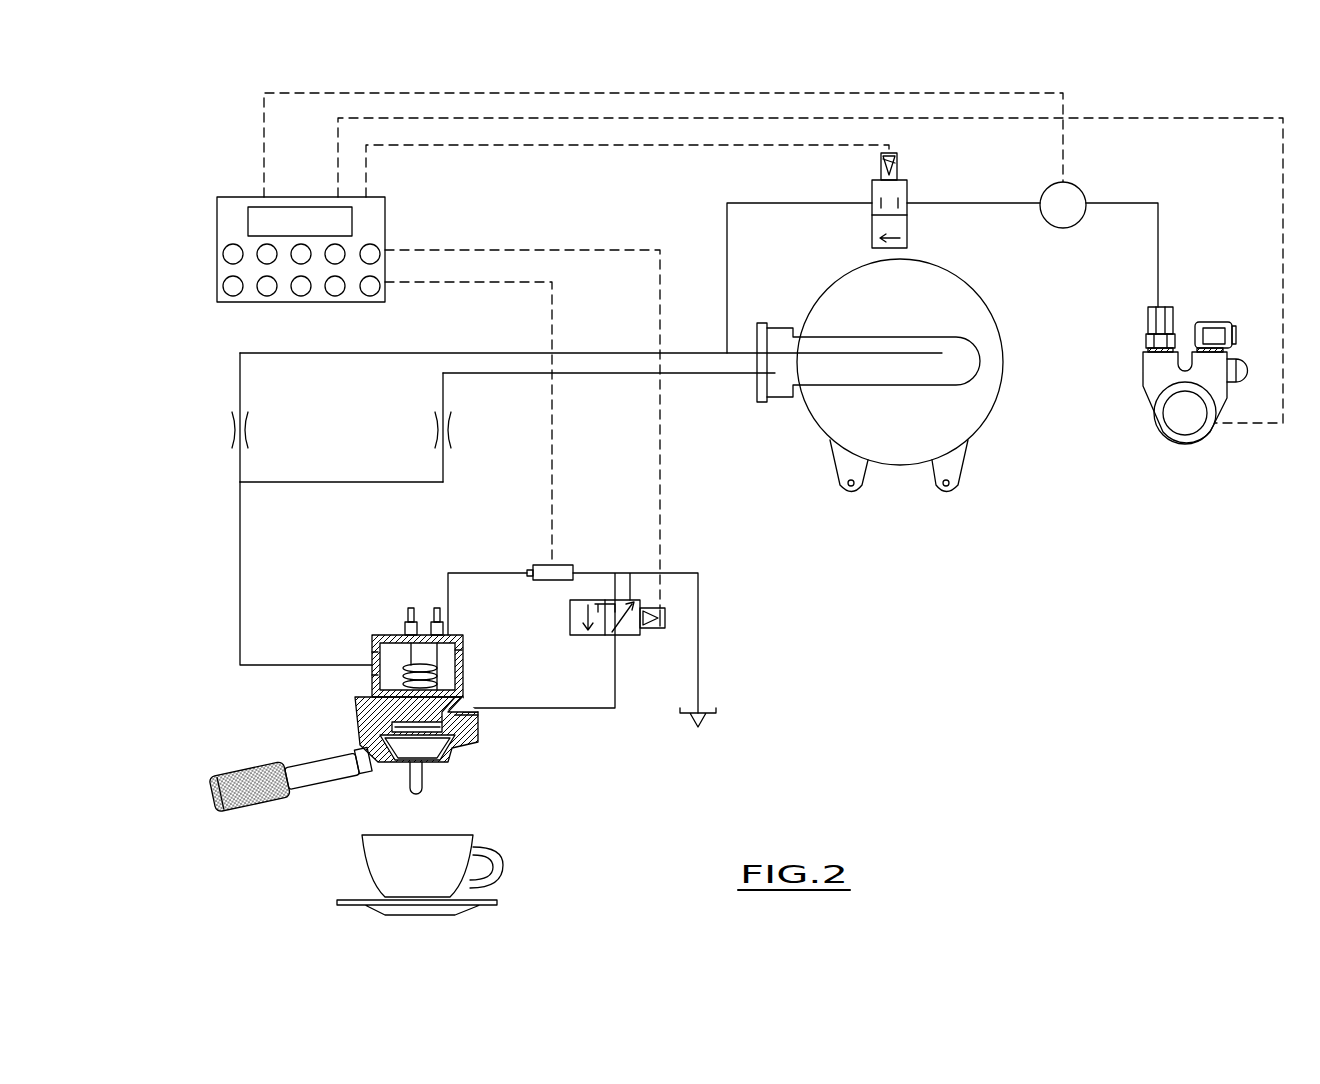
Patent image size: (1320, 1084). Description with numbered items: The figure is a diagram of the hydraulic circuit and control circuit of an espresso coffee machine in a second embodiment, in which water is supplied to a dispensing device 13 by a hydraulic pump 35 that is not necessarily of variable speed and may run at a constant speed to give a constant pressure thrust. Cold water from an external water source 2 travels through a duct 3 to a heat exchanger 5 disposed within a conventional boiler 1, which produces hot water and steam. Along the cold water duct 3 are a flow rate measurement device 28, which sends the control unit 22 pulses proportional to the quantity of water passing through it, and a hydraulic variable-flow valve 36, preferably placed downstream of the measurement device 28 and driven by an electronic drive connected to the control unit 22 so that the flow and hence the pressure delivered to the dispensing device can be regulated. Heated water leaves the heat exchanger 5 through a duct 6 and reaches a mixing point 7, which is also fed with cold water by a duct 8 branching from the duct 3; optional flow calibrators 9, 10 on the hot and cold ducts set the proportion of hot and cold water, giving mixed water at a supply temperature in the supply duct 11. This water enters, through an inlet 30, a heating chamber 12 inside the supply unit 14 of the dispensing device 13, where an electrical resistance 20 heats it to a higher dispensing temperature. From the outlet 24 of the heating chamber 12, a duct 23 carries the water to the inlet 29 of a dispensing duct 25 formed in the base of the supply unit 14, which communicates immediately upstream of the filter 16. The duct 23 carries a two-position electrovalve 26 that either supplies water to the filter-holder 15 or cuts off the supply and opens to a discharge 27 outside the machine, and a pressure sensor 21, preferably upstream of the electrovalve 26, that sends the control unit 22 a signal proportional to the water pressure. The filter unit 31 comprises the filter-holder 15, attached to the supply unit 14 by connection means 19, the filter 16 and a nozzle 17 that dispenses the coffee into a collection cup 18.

The boiler 1 is at (972, 412).
The external water source of cold water 2 is at (1232, 335).
The duct 3 is at (727, 265).
The heat exchanger 5 is at (830, 345).
The duct 6 is at (700, 382).
The mixing point 7 is at (242, 482).
The duct 8 is at (443, 353).
The flow calibrator 9 is at (452, 430).
The flow calibrator 10 is at (232, 430).
The supply duct 11 is at (238, 628).
The heating chamber 12 is at (375, 678).
The dispensing device 13 is at (330, 728).
The supply unit 14 is at (362, 690).
The filter-holder 15 is at (387, 762).
The filter 16 is at (445, 765).
The nozzle 17 is at (425, 793).
The collection cup 18 is at (395, 862).
The connection means 19 is at (482, 722).
The electrical resistance 20 is at (410, 615).
The pressure sensor 21 is at (560, 562).
The control unit 22 is at (232, 205).
The duct 23 is at (468, 573).
The outlet 24 is at (465, 655).
The dispensing duct 25 is at (458, 688).
The electrovalve 26 is at (602, 637).
The discharge 27 is at (708, 722).
The flow rate measurement device 28 is at (1080, 190).
The inlet 29 is at (462, 710).
The inlet 30 is at (372, 660).
The filter unit 31 is at (398, 782).
The hydraulic pump 35 is at (1175, 447).
The hydraulic variable-flow valve 36 is at (907, 190).